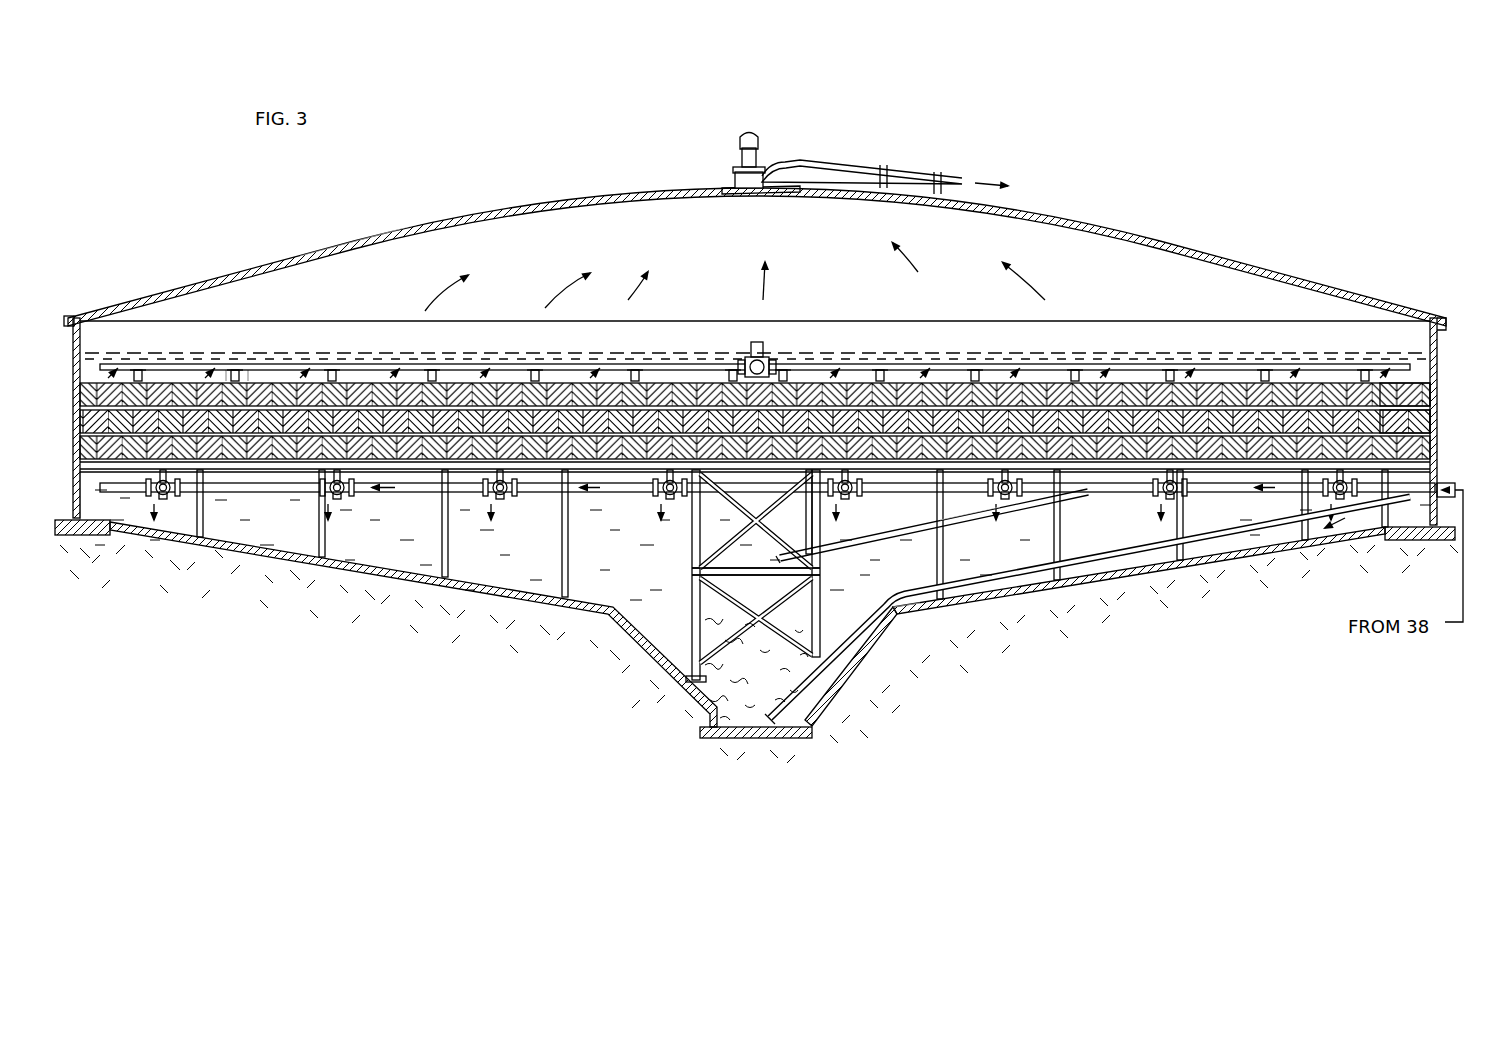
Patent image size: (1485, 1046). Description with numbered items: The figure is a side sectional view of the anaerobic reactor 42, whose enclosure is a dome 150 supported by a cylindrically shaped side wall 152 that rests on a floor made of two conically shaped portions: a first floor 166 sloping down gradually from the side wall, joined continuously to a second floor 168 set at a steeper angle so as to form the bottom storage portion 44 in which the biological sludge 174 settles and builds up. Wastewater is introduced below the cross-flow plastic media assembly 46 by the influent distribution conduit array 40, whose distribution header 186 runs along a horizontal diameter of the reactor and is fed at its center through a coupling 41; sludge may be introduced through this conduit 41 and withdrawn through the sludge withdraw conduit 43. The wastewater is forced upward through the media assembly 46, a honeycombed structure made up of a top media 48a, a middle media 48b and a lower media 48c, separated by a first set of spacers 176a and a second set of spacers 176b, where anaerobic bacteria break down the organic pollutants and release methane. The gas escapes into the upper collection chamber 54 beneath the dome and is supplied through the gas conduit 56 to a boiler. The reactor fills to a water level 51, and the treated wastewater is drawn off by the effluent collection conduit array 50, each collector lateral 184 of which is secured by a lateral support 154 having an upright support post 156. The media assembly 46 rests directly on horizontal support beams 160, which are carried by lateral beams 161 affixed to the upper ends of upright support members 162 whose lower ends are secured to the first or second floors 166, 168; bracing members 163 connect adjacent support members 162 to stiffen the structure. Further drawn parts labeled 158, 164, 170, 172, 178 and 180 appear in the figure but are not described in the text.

The dome 150 is at (393, 230).
The side wall 152 is at (73, 340).
The gas conduit 56 is at (912, 182).
The upper collection chamber 54 is at (960, 253).
The anaerobic reactor 42 is at (1296, 262).
The top media 48a is at (1388, 392).
The middle media 48b is at (1403, 420).
The lower media 48c is at (1422, 494).
The cross-flow plastic media assembly 46 is at (774, 369).
The first set of spacers 176a is at (1222, 402).
The second set of spacers 176b is at (1290, 430).
The effluent collection conduit array 50 is at (895, 368).
The water level 51 is at (325, 367).
The collector lateral 184 is at (523, 380).
The outlet nozzles 158 is at (130, 388).
The support post 156 is at (230, 375).
The lateral support 154 is at (248, 382).
The lateral beams 161 is at (128, 468).
The support beams 160 is at (290, 463).
The support members 162 is at (325, 533).
The distribution header 186 is at (440, 480).
The influent distribution conduit array 40 is at (548, 502).
The bracing members 163 is at (737, 607).
The riser pipe 170 is at (813, 528).
The truss cross beam 178 is at (820, 571).
The coupling 41 is at (967, 522).
The sludge withdraw conduit 43 is at (1085, 553).
The sludge pipe 172 is at (1023, 578).
The first floor 166 is at (1183, 560).
The sludge 174 is at (908, 612).
The second floor 168 is at (858, 652).
The left sloped floor 164 is at (687, 743).
The hopper base 180 is at (760, 738).
The storage portion 44 is at (770, 678).